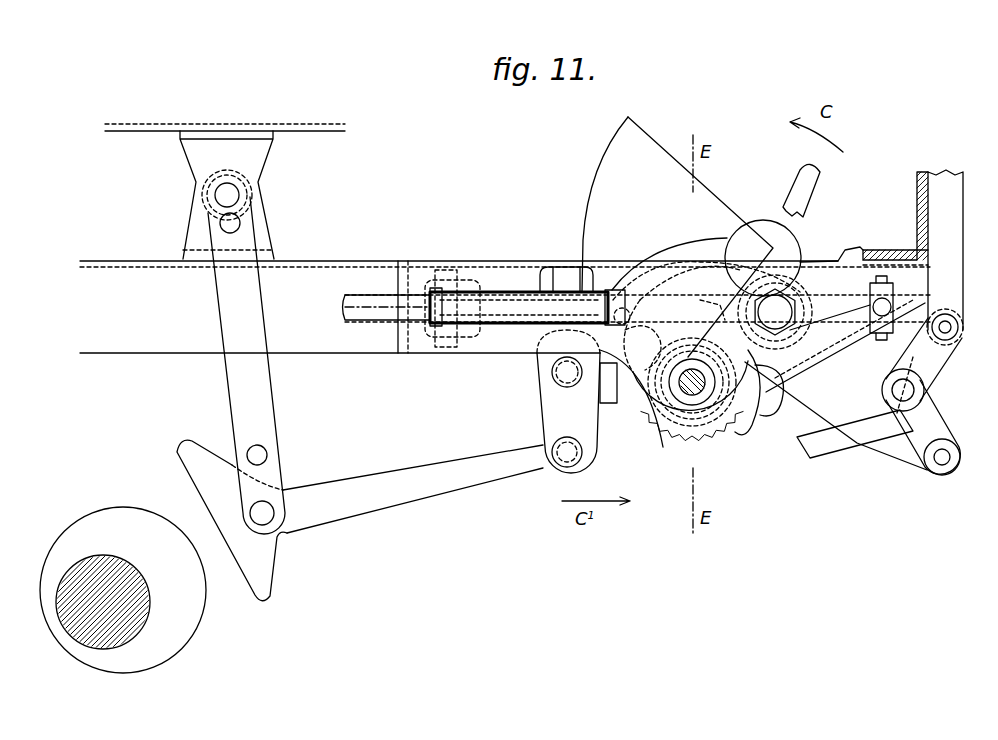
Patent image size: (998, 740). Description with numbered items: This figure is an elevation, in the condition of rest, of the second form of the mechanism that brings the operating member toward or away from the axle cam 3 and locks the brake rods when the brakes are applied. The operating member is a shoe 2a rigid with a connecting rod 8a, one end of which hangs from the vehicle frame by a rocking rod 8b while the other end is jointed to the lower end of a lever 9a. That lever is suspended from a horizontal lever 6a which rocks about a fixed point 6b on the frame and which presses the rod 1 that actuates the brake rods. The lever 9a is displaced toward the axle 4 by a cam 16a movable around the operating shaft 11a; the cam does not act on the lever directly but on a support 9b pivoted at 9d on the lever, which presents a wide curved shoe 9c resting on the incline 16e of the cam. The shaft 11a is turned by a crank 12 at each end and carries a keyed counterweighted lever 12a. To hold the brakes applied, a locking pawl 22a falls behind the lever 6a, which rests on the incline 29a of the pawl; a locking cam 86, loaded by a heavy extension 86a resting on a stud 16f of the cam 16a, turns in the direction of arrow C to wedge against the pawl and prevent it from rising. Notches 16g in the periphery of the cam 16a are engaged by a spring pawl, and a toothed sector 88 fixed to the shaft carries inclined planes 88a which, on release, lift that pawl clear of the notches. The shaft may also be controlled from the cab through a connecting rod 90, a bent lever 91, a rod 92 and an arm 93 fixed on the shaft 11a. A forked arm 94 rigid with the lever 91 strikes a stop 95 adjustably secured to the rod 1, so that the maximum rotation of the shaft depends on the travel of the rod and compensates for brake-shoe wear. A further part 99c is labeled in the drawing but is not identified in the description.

The rod 1 is at (375, 287).
The shoe 2a is at (232, 520).
The axle cam 3 is at (123, 590).
The axle 4 is at (112, 562).
The horizontal lever 6a is at (545, 290).
The fixed point 6b is at (528, 301).
The connecting rod 8a is at (413, 489).
The rocking rod 8b is at (246, 365).
The lever 9a is at (568, 401).
The support 9b is at (625, 400).
The curved shoe 9c is at (608, 405).
The pivot 9d is at (560, 372).
The operating shaft 11a is at (690, 375).
The crank 12 is at (808, 198).
The counterweighted lever 12a is at (708, 318).
The cam 16a is at (741, 284).
The incline 16e is at (657, 258).
The stud 16f is at (641, 348).
The notches 16g is at (746, 430).
The locking pawl 22a is at (690, 237).
The incline of the pawl 29a is at (589, 171).
The locking cam 86 is at (658, 437).
The heavy extension 86a is at (674, 262).
The toothed sector 88 is at (764, 412).
The inclined planes 88a is at (720, 437).
The connecting rod 90 is at (913, 250).
The bent lever 91 is at (930, 384).
The rod 92 is at (836, 416).
The arm 93 is at (788, 402).
The forked arm 94 is at (855, 434).
The stop 95 is at (892, 344).
The nut 99c is at (755, 312).